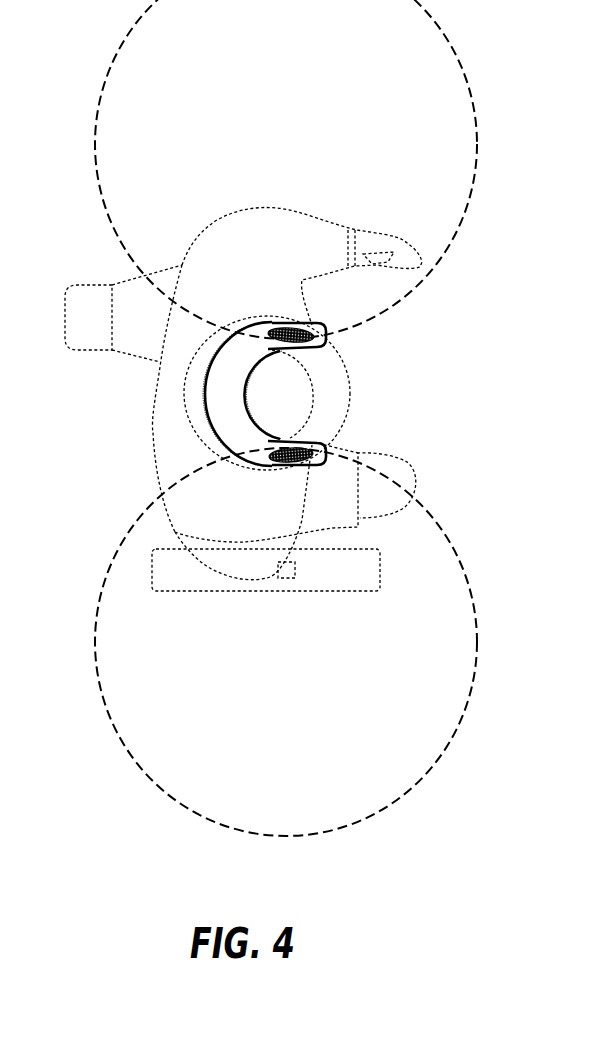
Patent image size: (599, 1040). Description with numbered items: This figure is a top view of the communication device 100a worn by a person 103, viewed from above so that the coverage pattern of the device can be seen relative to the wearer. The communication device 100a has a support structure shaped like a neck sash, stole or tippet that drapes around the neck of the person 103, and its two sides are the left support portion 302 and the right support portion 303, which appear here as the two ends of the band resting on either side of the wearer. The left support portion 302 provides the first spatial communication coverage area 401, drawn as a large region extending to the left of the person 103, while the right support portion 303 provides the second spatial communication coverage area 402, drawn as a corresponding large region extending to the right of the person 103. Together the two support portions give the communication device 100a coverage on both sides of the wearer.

The first spatial communication coverage area 401 is at (300, 155).
The second spatial communication coverage area 402 is at (300, 648).
The communication device 100a is at (210, 378).
The person 103 is at (157, 428).
The left support portion 302 is at (298, 321).
The right support portion 303 is at (298, 466).